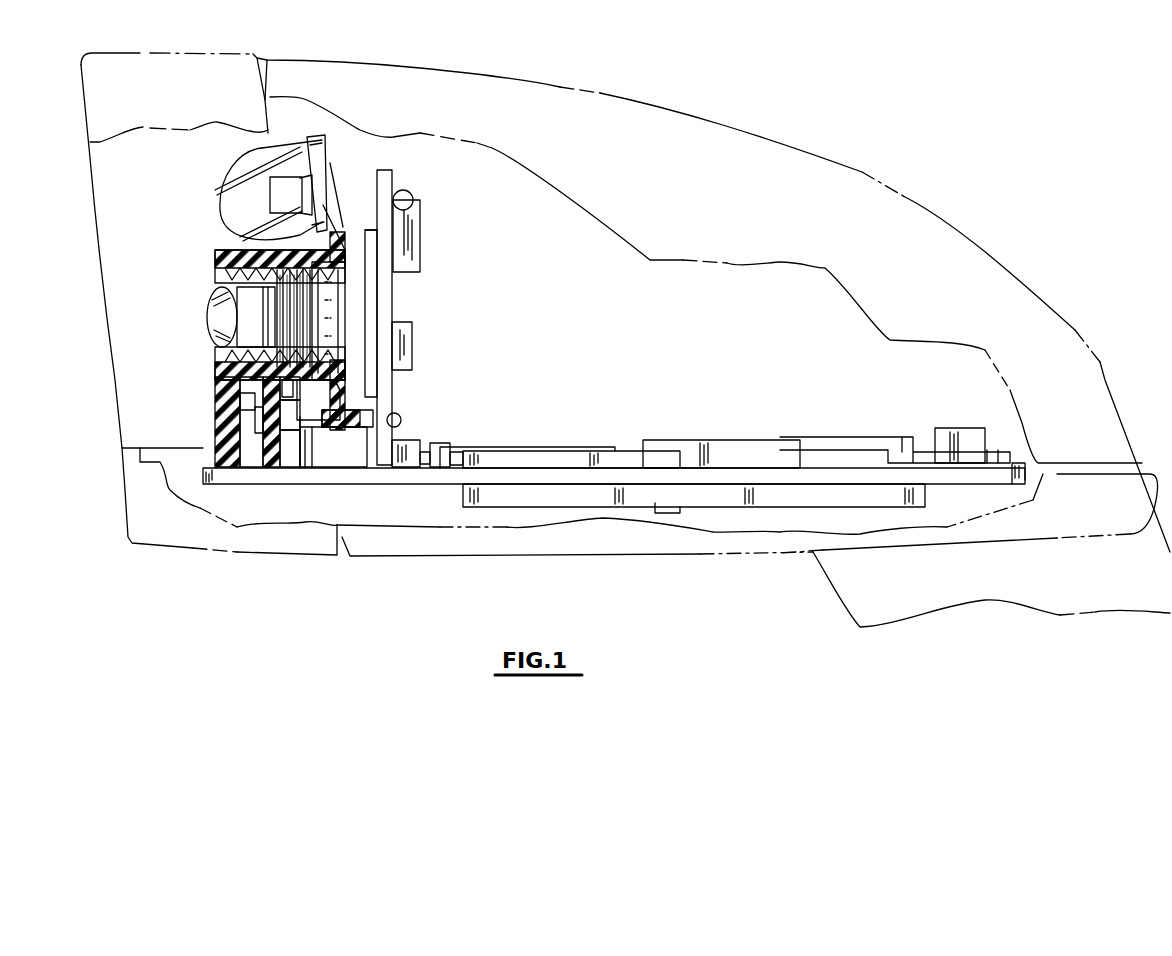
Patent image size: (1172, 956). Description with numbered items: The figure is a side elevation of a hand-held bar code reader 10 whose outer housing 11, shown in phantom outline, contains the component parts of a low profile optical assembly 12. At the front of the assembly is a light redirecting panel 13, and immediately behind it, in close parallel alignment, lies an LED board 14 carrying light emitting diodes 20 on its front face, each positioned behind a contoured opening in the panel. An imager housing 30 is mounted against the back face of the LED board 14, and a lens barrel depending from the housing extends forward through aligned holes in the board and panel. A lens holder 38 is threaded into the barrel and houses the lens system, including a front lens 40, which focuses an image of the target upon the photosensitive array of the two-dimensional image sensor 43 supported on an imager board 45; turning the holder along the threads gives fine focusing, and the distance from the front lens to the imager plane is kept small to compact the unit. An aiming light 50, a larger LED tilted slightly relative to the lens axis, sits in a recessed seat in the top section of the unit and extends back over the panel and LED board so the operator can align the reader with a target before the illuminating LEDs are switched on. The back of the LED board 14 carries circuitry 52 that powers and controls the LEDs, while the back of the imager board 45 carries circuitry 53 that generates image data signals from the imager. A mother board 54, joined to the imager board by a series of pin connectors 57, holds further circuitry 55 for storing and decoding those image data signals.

The hand-held bar code reader 10 is at (768, 80).
The outer housing 11 is at (868, 170).
The low profile optical assembly 12 is at (445, 330).
The front light redirecting panel 13 is at (195, 430).
The LED board 14 is at (268, 478).
The light emitting diode 20 is at (250, 425).
The imager housing 30 is at (362, 440).
The lens holder 38 is at (215, 277).
The front lens 40 is at (207, 315).
The 2D image sensor 43 is at (375, 318).
The imager board 45 is at (395, 165).
The aiming light 50 is at (285, 142).
The circuitry 52 is at (312, 447).
The circuitry 53 is at (440, 225).
The mother board 54 is at (835, 472).
The circuitry 55 is at (632, 425).
The pin connectors 57 is at (410, 445).